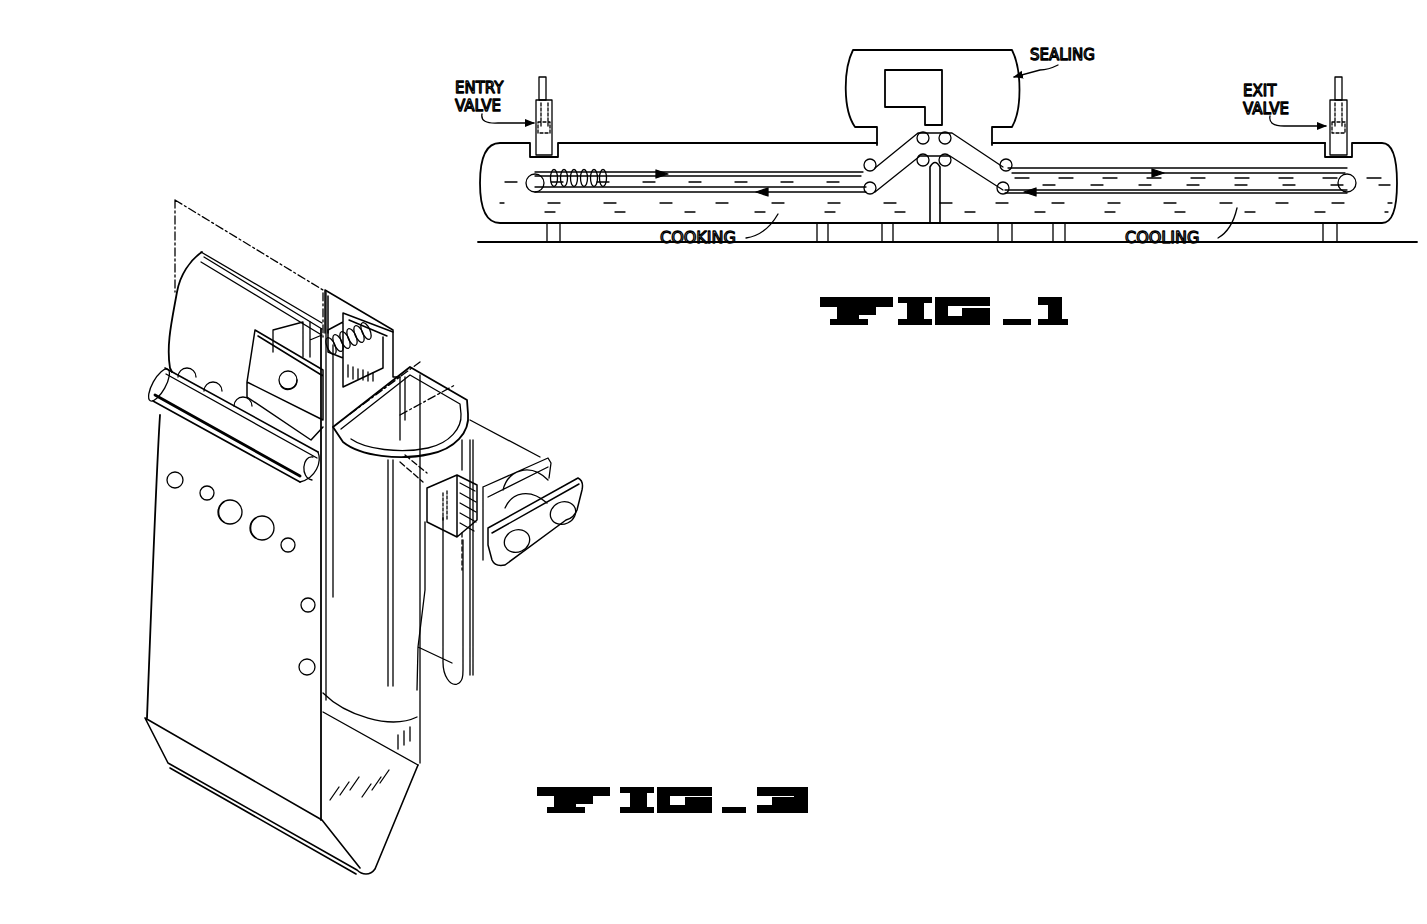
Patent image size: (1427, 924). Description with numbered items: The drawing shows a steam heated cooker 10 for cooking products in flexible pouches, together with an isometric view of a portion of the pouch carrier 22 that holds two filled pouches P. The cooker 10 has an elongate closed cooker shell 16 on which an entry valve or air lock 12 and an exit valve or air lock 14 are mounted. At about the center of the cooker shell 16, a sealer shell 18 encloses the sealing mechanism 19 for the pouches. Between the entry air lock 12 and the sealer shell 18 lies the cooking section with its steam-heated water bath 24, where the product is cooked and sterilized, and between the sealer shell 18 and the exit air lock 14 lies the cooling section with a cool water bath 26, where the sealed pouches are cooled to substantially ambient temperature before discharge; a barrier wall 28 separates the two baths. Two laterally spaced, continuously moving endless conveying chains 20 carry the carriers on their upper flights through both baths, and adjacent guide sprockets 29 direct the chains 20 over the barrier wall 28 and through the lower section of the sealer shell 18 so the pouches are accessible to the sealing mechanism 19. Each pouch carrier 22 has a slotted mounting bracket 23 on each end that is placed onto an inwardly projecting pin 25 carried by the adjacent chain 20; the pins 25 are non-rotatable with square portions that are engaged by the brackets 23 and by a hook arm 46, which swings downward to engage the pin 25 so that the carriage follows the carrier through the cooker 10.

In FIG. 1, the cooker 10 is at (1156, 57).
In FIG. 1, the entry valve or air lock 12 is at (552, 114).
In FIG. 1, the exit valve or air lock 14 is at (1348, 108).
In FIG. 1, the cooker shell 16 is at (1083, 143).
In FIG. 1, the sealer shell 18 is at (853, 55).
In FIG. 1, the sealing mechanism 19 is at (942, 70).
In FIG. 1, the conveying chains 20 is at (714, 157).
In FIG. 3, the conveying chains 20 is at (577, 497).
In FIG. 1, the pouch carrier 22 is at (598, 188).
In FIG. 3, the pouch carrier 22 is at (247, 617).
In FIG. 3, the slotted mounting bracket 23 is at (382, 605).
In FIG. 1, the steam-heated water bath 24 is at (638, 168).
In FIG. 3, the inwardly projecting pin 25 is at (436, 510).
In FIG. 1, the cool water bath 26 is at (1125, 168).
In FIG. 1, the barrier wall 28 is at (930, 196).
In FIG. 1, the guide sprockets 29 is at (864, 166).
In FIG. 3, the hook arm 46 is at (470, 423).
In FIG. 3, the pouch P is at (205, 218).